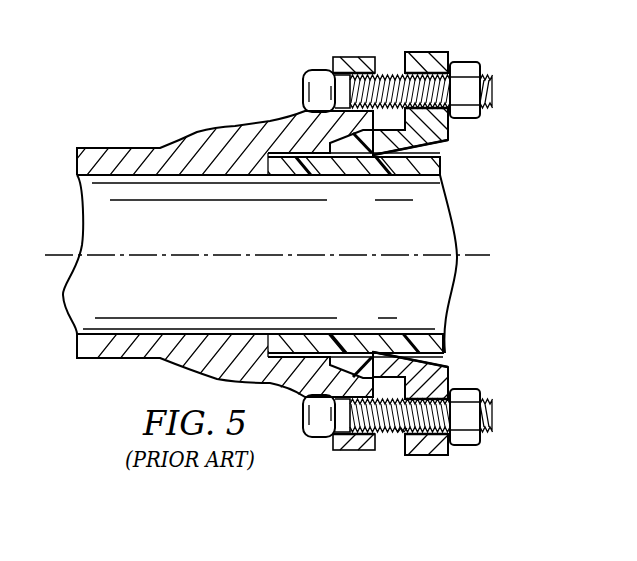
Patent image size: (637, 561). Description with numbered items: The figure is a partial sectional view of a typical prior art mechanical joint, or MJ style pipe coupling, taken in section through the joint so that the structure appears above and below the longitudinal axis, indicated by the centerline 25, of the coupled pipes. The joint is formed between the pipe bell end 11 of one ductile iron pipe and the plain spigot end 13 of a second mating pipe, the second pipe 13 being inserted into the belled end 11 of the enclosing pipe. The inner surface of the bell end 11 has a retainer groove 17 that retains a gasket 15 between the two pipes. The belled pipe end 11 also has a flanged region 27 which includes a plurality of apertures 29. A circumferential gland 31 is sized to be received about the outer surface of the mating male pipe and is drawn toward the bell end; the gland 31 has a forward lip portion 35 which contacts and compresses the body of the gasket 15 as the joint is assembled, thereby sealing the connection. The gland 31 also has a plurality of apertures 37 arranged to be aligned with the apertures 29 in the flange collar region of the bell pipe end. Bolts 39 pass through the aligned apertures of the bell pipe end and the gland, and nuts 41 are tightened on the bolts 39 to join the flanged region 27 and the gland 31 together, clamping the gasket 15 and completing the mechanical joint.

The pipe bell end 11 is at (274, 246).
The plain spigot end 13 is at (442, 163).
The gasket 15 is at (342, 138).
The retainer groove 17 is at (348, 160).
The longitudinal axis 25 is at (477, 254).
The flanged region 27 is at (357, 56).
The apertures 29 is at (338, 88).
The circumferential gland 31 is at (428, 52).
The forward lip portion 35 is at (368, 378).
The apertures 37 is at (398, 432).
The bolts 39 is at (383, 75).
The nuts 41 is at (466, 62).